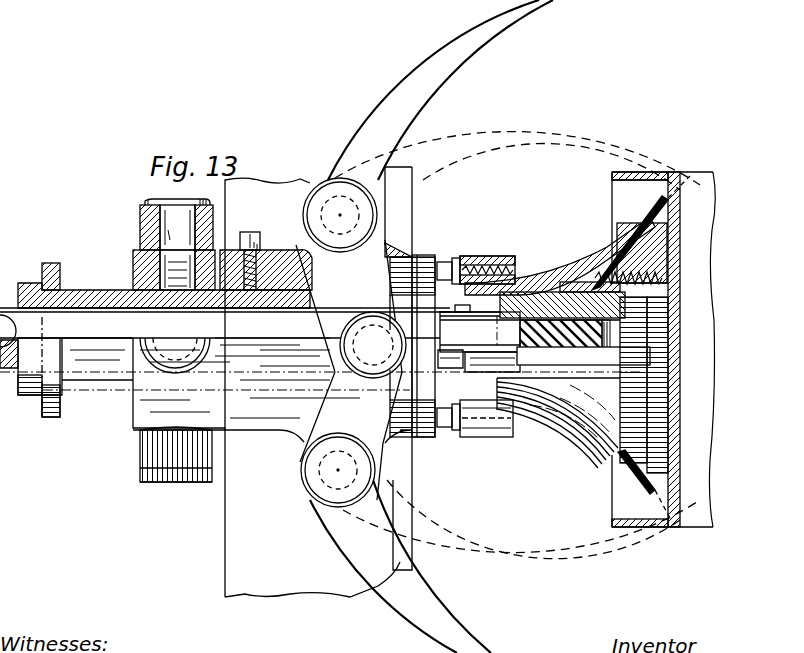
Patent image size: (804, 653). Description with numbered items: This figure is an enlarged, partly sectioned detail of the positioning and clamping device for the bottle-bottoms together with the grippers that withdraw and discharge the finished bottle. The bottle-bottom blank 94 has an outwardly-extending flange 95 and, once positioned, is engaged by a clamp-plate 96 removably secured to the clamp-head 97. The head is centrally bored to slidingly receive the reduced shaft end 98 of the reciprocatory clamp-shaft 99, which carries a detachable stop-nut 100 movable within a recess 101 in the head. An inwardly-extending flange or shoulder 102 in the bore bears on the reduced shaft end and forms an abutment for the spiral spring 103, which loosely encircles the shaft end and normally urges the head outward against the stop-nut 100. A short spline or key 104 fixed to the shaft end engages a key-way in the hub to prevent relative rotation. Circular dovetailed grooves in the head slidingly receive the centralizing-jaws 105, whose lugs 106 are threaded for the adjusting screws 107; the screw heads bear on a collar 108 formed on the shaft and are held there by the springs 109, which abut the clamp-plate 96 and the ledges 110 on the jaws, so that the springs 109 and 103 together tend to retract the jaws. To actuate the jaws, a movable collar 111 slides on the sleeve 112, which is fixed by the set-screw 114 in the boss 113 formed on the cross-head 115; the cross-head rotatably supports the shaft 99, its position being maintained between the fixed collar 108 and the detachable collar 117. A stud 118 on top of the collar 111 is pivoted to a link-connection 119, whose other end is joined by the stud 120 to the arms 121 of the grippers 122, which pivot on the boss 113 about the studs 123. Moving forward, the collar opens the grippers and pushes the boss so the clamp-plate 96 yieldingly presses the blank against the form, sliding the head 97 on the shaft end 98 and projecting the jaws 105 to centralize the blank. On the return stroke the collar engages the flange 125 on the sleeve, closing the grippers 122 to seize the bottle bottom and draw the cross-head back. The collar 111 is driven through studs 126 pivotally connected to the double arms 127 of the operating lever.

The blank 94 is at (681, 206).
The flange 95 is at (653, 176).
The clamp-plate 96 is at (664, 272).
The clamp-head 97 is at (668, 249).
The shaft end 98 is at (479, 342).
The clamp-shaft 99 is at (225, 327).
The stop-nut 100 is at (648, 318).
The recess 101 is at (653, 347).
The flange or shoulder 102 is at (582, 290).
The spiral spring 103 is at (558, 418).
The spline or key 104 is at (462, 306).
The centralizing-jaws 105 is at (545, 275).
The lugs 106 is at (505, 248).
The adjusting screws 107 is at (470, 262).
The collar 108 is at (426, 255).
The springs 109 is at (610, 240).
The ledges 110 is at (592, 280).
The movable collar 111 is at (134, 266).
The sleeve 112 is at (90, 286).
The boss 113 is at (272, 250).
The set-screw 114 is at (249, 231).
The cross-head 115 is at (272, 382).
The detachable collar 117 is at (27, 393).
The stud 118 is at (167, 355).
The link-connection 119 is at (240, 347).
The stud 120 is at (373, 345).
The arms 121 is at (349, 370).
The grippers 122 is at (415, 70).
The studs 123 is at (338, 212).
The flange 125 is at (50, 262).
The studs 126 is at (158, 204).
The double arms 127 is at (140, 218).